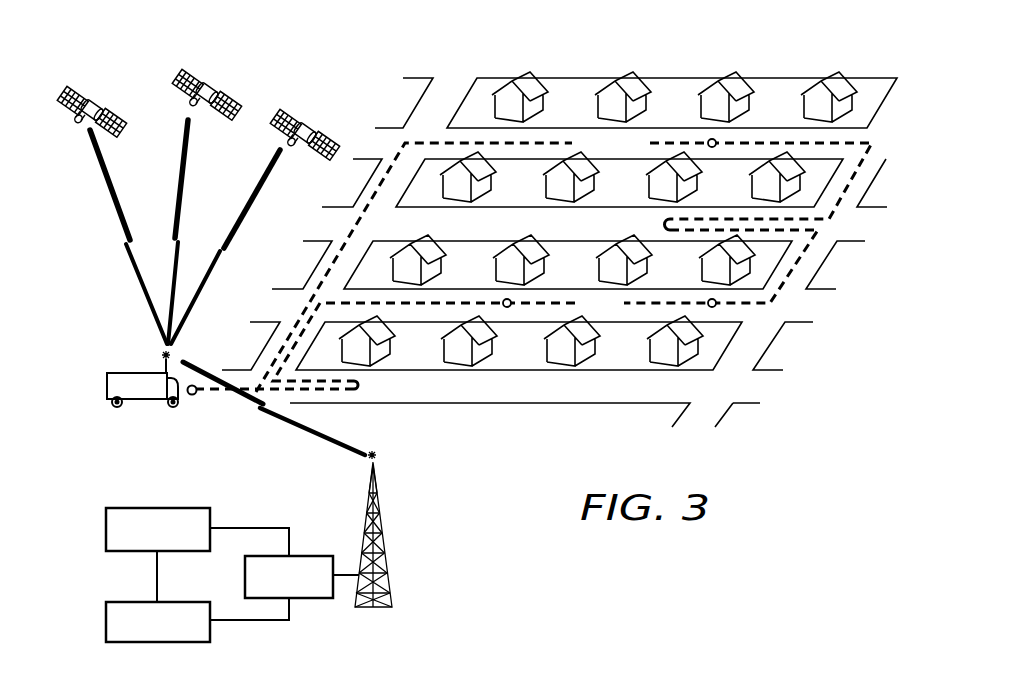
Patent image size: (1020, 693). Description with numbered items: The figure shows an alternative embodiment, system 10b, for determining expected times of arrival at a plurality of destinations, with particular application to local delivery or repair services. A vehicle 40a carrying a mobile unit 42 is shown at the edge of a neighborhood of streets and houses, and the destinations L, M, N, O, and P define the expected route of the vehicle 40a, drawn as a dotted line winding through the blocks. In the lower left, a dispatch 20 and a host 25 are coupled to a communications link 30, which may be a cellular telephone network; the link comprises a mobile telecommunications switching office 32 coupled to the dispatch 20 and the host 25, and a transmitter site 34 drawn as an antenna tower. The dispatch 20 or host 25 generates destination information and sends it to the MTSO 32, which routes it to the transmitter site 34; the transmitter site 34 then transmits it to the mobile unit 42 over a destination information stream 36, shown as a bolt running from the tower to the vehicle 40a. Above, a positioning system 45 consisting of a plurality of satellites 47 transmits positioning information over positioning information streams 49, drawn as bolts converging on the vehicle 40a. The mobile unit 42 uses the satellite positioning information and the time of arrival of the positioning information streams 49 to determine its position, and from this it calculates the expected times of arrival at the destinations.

The system 10b is at (632, 56).
The dispatch 20 is at (106, 529).
The host 25 is at (106, 620).
The communications link 30 is at (343, 618).
The mobile telecommunications switching office (MTSO) 32 is at (313, 556).
The transmitter site 34 is at (388, 556).
The destination information stream 36 is at (308, 430).
The vehicle 40a is at (107, 386).
The mobile unit 42 is at (164, 404).
The positioning system 45 is at (372, 52).
The satellites 47 is at (100, 100).
The positioning information streams 49 is at (178, 176).